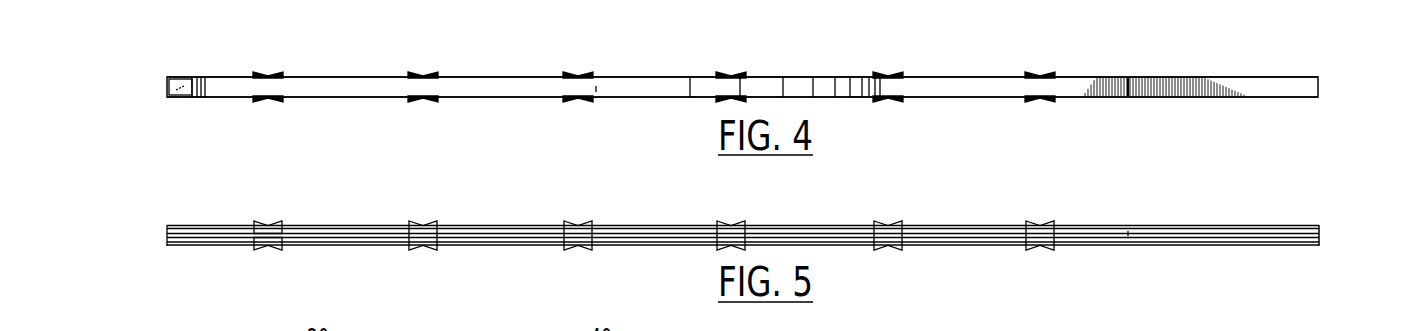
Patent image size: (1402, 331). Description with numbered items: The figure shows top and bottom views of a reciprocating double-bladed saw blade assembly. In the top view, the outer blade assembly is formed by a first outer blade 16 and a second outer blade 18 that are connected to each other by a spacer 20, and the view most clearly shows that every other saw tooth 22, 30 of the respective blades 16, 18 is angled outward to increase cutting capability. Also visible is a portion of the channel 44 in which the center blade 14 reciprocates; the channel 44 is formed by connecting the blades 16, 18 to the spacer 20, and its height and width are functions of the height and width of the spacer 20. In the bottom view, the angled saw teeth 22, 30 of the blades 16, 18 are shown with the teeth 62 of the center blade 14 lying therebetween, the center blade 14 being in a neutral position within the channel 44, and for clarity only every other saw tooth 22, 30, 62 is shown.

In FIG. 5, the center blade 14 is at (166, 238).
In FIG. 4, the first outer blade 16 is at (222, 98).
In FIG. 5, the first outer blade 16 is at (220, 246).
In FIG. 4, the second outer blade 18 is at (222, 77).
In FIG. 5, the second outer blade 18 is at (192, 225).
In FIG. 4, the spacer 20 is at (325, 88).
In FIG. 4, the saw teeth 22 is at (427, 98).
In FIG. 5, the saw teeth 22 is at (270, 250).
In FIG. 4, the saw teeth 30 is at (427, 77).
In FIG. 5, the saw teeth 30 is at (272, 221).
In FIG. 4, the channel 44 is at (167, 98).
In FIG. 5, the channel 44 is at (167, 235).
In FIG. 5, the teeth 62 is at (407, 236).